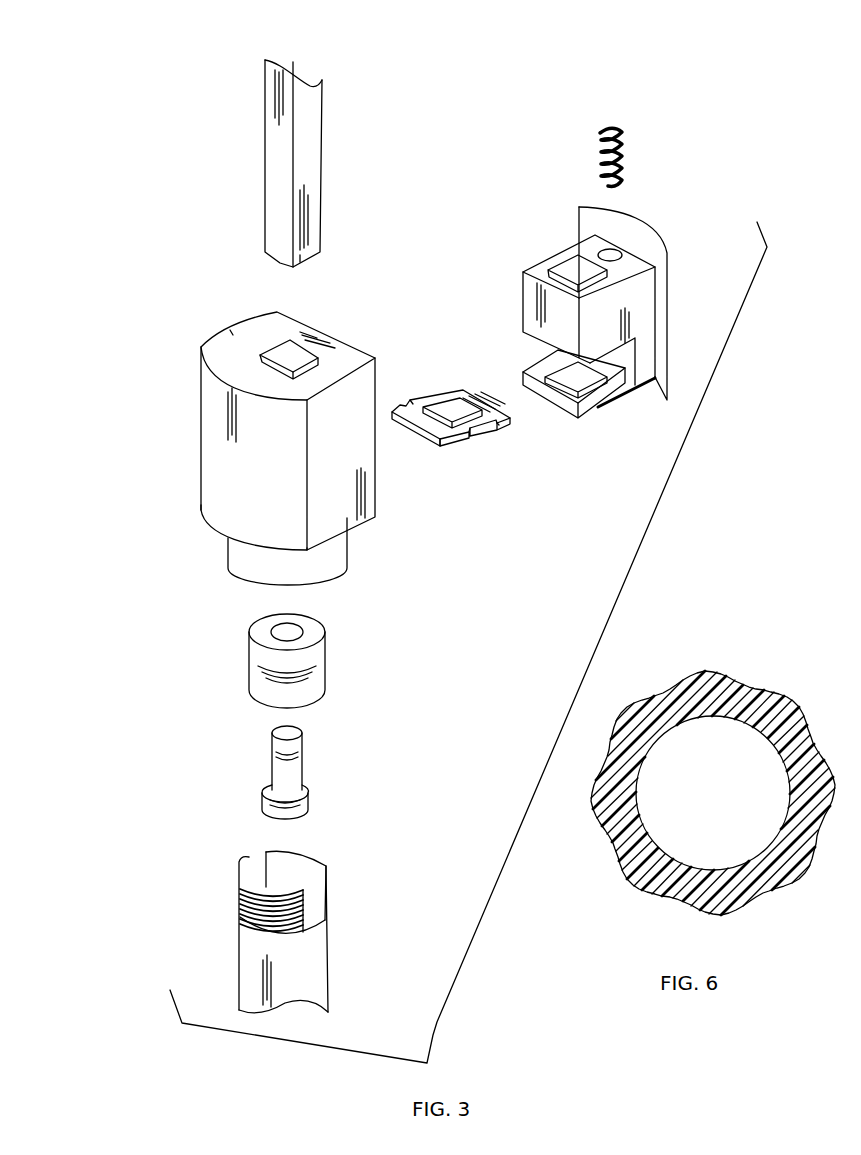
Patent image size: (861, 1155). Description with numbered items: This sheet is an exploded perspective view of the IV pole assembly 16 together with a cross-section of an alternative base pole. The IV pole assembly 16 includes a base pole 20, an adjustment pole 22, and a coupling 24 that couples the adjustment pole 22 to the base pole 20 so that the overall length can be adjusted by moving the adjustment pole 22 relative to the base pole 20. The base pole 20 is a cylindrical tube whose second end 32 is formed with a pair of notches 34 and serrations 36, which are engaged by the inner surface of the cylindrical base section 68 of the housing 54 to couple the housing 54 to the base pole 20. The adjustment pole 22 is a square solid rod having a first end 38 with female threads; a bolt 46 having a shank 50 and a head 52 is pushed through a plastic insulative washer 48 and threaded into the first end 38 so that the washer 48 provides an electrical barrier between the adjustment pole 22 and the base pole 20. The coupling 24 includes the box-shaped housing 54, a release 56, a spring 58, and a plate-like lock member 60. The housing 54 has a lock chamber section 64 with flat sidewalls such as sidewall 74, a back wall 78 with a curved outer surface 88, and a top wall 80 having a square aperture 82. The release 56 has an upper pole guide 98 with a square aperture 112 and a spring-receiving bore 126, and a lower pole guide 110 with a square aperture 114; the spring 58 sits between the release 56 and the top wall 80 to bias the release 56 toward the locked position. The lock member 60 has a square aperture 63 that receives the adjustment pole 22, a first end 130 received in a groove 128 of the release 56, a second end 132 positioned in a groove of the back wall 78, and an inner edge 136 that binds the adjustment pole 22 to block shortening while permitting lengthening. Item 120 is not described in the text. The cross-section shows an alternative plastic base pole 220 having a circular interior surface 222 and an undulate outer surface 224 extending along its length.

In FIG. 3, the IV pole assembly 16 is at (562, 66).
In FIG. 3, the adjustment pole 22 is at (324, 162).
In FIG. 3, the first end of adjustment pole 38 is at (313, 244).
In FIG. 3, the coupling 24 is at (92, 483).
In FIG. 3, the housing 54 is at (208, 337).
In FIG. 3, the top wall 80 is at (240, 335).
In FIG. 3, the square aperture 82 is at (307, 352).
In FIG. 3, the lock chamber section 64 is at (208, 463).
In FIG. 3, the sidewall 74 is at (363, 453).
In FIG. 3, the back wall 78 is at (222, 508).
In FIG. 3, the curved outer surface 88 is at (248, 530).
In FIG. 3, the base section 68 is at (360, 547).
In FIG. 3, the washer 48 is at (243, 652).
In FIG. 3, the bolt 46 is at (322, 797).
In FIG. 3, the shank 50 is at (272, 765).
In FIG. 3, the head 52 is at (260, 802).
In FIG. 3, the base pole 20 is at (331, 990).
In FIG. 3, the serrations 36 is at (328, 873).
In FIG. 3, the second end of base pole 32 is at (325, 937).
In FIG. 3, the notches 34 is at (266, 855).
In FIG. 3, the lock member 60 is at (495, 440).
In FIG. 3, the square aperture of lock member 63 is at (448, 404).
In FIG. 3, the inner edge 136 is at (430, 400).
In FIG. 3, the first end of lock member 130 is at (507, 409).
In FIG. 3, the second end of lock member 132 is at (437, 438).
In FIG. 3, the spring 58 is at (623, 157).
In FIG. 3, the release 56 is at (688, 247).
In FIG. 3, the back plate 120 is at (630, 265).
In FIG. 3, the upper pole guide 98 is at (540, 267).
In FIG. 3, the square aperture of upper pole guide 112 is at (568, 267).
In FIG. 3, the spring-receiving bore 126 is at (614, 248).
In FIG. 3, the lower pole guide 110 is at (597, 397).
In FIG. 3, the square aperture of lower pole guide 114 is at (558, 373).
In FIG. 3, the groove 128 is at (621, 380).
In FIG. 6, the base pole 220 is at (608, 925).
In FIG. 6, the circular interior surface 222 is at (690, 868).
In FIG. 6, the undulate outer surface 224 is at (777, 890).